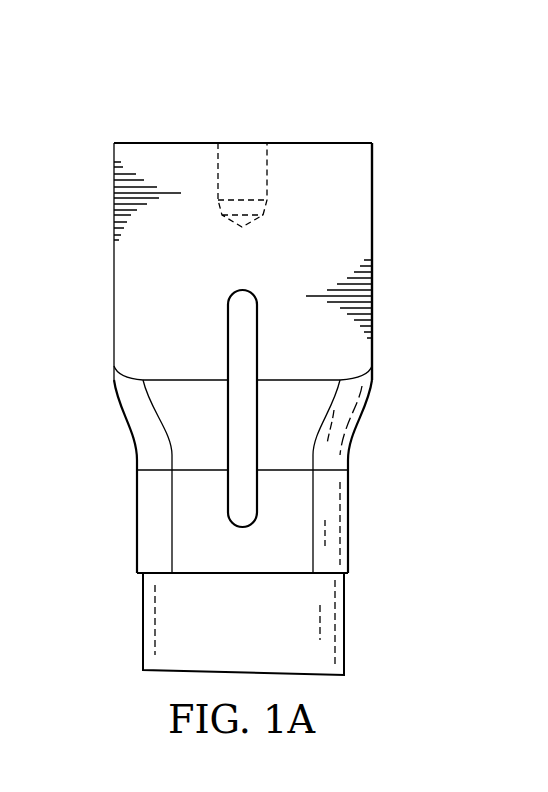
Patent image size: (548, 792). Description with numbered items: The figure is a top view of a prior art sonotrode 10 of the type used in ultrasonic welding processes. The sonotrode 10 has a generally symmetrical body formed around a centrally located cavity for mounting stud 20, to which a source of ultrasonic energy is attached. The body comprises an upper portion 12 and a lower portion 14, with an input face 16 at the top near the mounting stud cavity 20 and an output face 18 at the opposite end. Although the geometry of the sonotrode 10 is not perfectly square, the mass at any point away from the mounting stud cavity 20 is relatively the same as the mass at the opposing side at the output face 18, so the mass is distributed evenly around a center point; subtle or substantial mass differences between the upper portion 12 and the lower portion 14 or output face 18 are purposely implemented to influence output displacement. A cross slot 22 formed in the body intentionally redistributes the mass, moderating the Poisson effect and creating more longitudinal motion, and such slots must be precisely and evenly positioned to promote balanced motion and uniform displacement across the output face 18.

The sonotrode 10 is at (366, 80).
The upper portion 12 is at (114, 262).
The lower portion 14 is at (180, 524).
The input face 16 is at (160, 143).
The output face 18 is at (143, 620).
The cavity for mounting stud 20 is at (221, 178).
The cross slot 22 is at (251, 341).